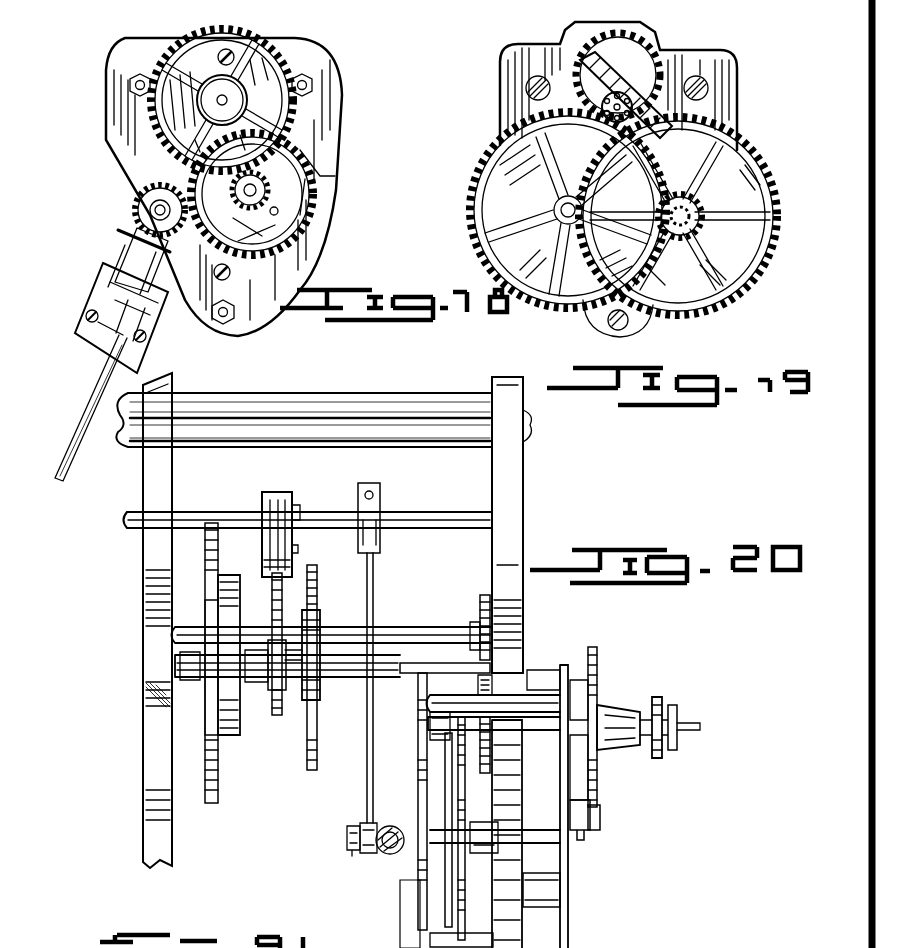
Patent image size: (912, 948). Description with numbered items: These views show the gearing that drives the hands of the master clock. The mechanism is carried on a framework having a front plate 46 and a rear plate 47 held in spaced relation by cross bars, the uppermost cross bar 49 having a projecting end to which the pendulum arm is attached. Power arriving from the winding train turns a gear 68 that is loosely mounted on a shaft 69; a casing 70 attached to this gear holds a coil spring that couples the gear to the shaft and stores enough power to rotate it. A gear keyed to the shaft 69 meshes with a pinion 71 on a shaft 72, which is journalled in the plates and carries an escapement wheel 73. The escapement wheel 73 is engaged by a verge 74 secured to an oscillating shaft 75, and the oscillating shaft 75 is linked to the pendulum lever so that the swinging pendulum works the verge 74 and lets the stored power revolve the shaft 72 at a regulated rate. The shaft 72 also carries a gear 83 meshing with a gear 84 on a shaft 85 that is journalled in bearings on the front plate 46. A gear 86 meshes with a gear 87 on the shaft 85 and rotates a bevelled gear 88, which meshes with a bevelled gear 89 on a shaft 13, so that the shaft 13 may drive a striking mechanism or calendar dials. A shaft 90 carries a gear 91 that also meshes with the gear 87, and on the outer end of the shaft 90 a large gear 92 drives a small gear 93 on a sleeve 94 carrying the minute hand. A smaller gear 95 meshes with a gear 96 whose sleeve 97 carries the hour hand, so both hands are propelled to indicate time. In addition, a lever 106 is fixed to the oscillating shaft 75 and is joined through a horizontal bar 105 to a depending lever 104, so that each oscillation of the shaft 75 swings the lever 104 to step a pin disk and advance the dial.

In FIG. 18, the shaft 13 is at (92, 388).
In FIG. 20, the front plate 46 is at (505, 492).
In FIG. 20, the rear plate 47 is at (150, 470).
In FIG. 20, the uppermost cross bar 49 is at (305, 408).
In FIG. 20, the gear 68 is at (222, 792).
In FIG. 20, the shaft 69 is at (362, 672).
In FIG. 20, the casing 70 is at (270, 572).
In FIG. 20, the pinion 71 is at (318, 615).
In FIG. 20, the shaft 72 is at (398, 634).
In FIG. 20, the escapement wheel 73 is at (230, 600).
In FIG. 20, the verge 74 is at (275, 525).
In FIG. 20, the oscillating shaft 75 is at (415, 522).
In FIG. 19, the gear 83 is at (620, 45).
In FIG. 20, the gear 83 is at (487, 595).
In FIG. 18, the gear 84 is at (290, 106).
In FIG. 19, the gear 84 is at (657, 80).
In FIG. 20, the gear 84 is at (494, 672).
In FIG. 19, the shaft 85 is at (690, 116).
In FIG. 20, the shaft 85 is at (598, 672).
In FIG. 18, the gear 86 is at (315, 176).
In FIG. 19, the gear 86 is at (493, 142).
In FIG. 20, the gear 86 is at (460, 777).
In FIG. 19, the gear 87 is at (587, 63).
In FIG. 20, the gear 87 is at (440, 738).
In FIG. 18, the bevelled gear 88 is at (135, 196).
In FIG. 18, the bevelled gear 89 is at (128, 232).
In FIG. 20, the shaft 90 is at (537, 825).
In FIG. 19, the gear 91 is at (765, 178).
In FIG. 20, the gear 91 is at (446, 900).
In FIG. 18, the large gear 92 is at (312, 205).
In FIG. 20, the large gear 92 is at (592, 788).
In FIG. 20, the small gear 93 is at (620, 762).
In FIG. 20, the sleeve 94 is at (682, 718).
In FIG. 20, the smaller gear 95 is at (600, 814).
In FIG. 20, the gear 96 is at (590, 650).
In FIG. 20, the sleeve 97 is at (628, 710).
In FIG. 20, the depending lever 104 is at (408, 890).
In FIG. 20, the horizontal bar 105 is at (383, 852).
In FIG. 20, the lever 106 is at (374, 722).